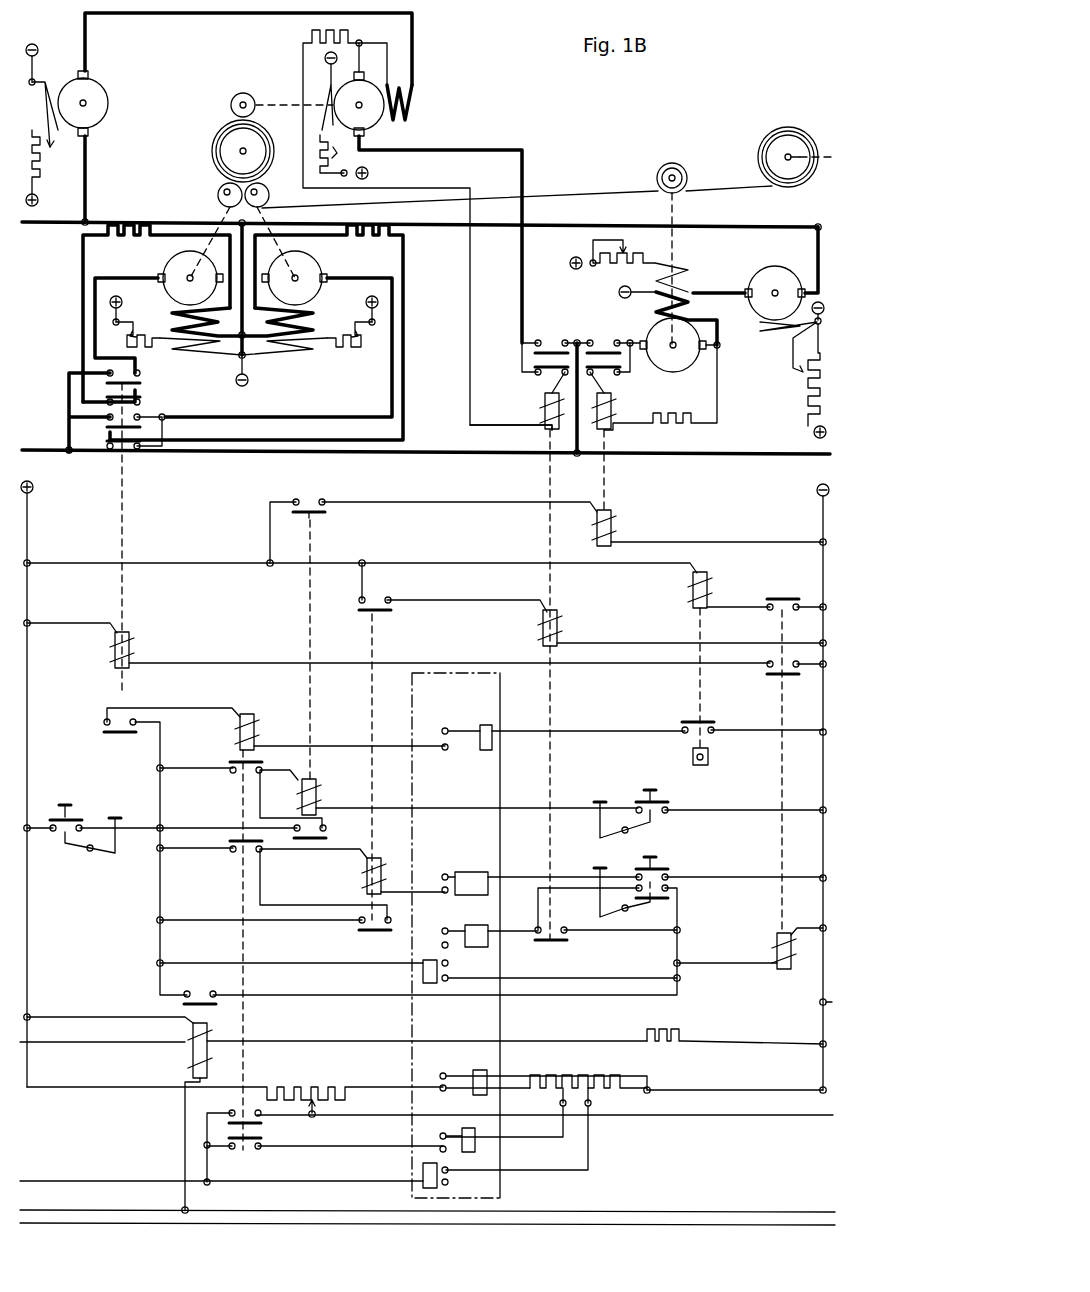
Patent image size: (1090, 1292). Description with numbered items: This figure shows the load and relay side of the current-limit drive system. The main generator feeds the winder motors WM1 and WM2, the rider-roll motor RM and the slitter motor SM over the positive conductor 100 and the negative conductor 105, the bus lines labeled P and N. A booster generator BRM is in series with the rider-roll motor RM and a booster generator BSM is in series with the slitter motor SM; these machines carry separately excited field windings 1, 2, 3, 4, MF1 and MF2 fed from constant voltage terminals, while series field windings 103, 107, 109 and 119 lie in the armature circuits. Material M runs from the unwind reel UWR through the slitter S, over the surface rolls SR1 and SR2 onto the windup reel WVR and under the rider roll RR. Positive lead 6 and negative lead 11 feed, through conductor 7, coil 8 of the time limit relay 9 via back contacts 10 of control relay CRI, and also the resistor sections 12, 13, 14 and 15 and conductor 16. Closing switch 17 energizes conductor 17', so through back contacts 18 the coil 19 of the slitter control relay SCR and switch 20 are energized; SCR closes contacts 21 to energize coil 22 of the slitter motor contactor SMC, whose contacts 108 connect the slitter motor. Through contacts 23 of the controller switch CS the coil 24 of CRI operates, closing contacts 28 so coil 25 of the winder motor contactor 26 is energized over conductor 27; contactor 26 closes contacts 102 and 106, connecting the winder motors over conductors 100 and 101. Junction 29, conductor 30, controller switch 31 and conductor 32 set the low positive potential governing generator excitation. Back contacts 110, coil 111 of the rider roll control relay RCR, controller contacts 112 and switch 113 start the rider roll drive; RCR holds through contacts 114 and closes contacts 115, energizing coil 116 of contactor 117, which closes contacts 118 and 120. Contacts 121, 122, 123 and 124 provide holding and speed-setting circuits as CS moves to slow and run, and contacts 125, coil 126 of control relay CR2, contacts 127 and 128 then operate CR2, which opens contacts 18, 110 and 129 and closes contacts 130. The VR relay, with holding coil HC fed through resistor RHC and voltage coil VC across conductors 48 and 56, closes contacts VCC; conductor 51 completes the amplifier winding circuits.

The field winding 1 is at (66, 93).
The field winding 2 is at (784, 335).
The field winding 3 is at (322, 90).
The field winding 4 is at (678, 266).
The positive lead 6 is at (30, 524).
The conductor 7 is at (153, 566).
The actuating coil 8 is at (709, 576).
The time limit relay 9 is at (688, 699).
The back contacts 10 is at (781, 602).
The negative lead 11 is at (820, 519).
The resistor section 12 is at (296, 1090).
The resistor section 13 is at (534, 1098).
The resistor section 14 is at (578, 1082).
The resistor section 15 is at (616, 1098).
The conductor 16 is at (755, 1090).
The switch 17 is at (162, 821).
The conductor 17' is at (140, 885).
The back contacts 18 is at (244, 780).
The actuating coil 19 is at (318, 782).
The switch 20 is at (657, 802).
The contacts 21 is at (322, 513).
The actuating coil 22 is at (610, 512).
The switch contacts 23 is at (454, 966).
The actuating coil 24 is at (774, 936).
The actuating coil 25 is at (134, 634).
The winder motor contactor 26 is at (112, 542).
The conductor 27 is at (243, 665).
The contacts 28 is at (786, 668).
The junction 29 is at (592, 1112).
The conductor 30 is at (558, 1172).
The controller switch 31 is at (450, 1184).
The conductor 32 is at (63, 1182).
The conductor 48 is at (68, 1212).
The conductor 51 is at (98, 1222).
The conductor 56 is at (72, 1043).
The conductor 100 is at (33, 455).
The conductor 101 is at (66, 399).
The contacts 102 is at (138, 380).
The series field winding 103 is at (175, 312).
The negative conductor 105 is at (145, 213).
The contacts 106 is at (138, 417).
The series field winding 107 is at (312, 314).
The contacts 108 is at (604, 345).
The series field winding 109 is at (690, 305).
The back contacts 110 is at (243, 856).
The actuating coil 111 is at (368, 872).
The controller contacts 112 is at (442, 875).
The switch 113 is at (665, 870).
The contacts 114 is at (366, 932).
The contacts 115 is at (368, 602).
The actuating coil 116 is at (559, 614).
The contactor 117 is at (542, 552).
The contacts 118 is at (560, 335).
The series field 119 is at (412, 101).
The contacts 120 is at (565, 945).
The contacts 121 is at (446, 931).
The controller switch contacts 122 is at (441, 928).
The contacts 123 is at (437, 1140).
The switch contacts 124 is at (440, 1074).
The contacts 125 is at (104, 730).
The actuating coil 126 is at (252, 716).
The switch contacts 127 is at (442, 745).
The contacts 128 is at (712, 727).
The contacts 129 is at (325, 1156).
The contacts 130 is at (240, 1108).
The booster generator BRM is at (102, 120).
The rider-roll motor RM is at (378, 122).
The rider roll RR is at (263, 95).
The windup reel WVR is at (221, 128).
The surface roll SR1 is at (217, 196).
The surface roll SR2 is at (270, 196).
The material M is at (583, 197).
The slitter S is at (683, 160).
The unwind reel UWR is at (775, 128).
The supply line N is at (55, 226).
The supply line P is at (50, 445).
The winder motor WM1 is at (164, 266).
The winder motor WM2 is at (322, 266).
The field winding MF1 is at (176, 336).
The field winding MF2 is at (310, 336).
The booster generator BSM is at (772, 272).
The slitter motor SM is at (682, 372).
The slitter motor contactor SMC is at (607, 495).
The slitter control relay SCR is at (306, 694).
The rider roll control relay RCR is at (373, 729).
The controller switch CS is at (510, 695).
The control relay CRI is at (779, 767).
The control relay CR2 is at (240, 902).
The contacts VCC is at (202, 990).
The VR relay VR is at (243, 1024).
The holding coil HC is at (190, 1036).
The voltage coil VC is at (207, 1055).
The resistor RHC is at (668, 1040).